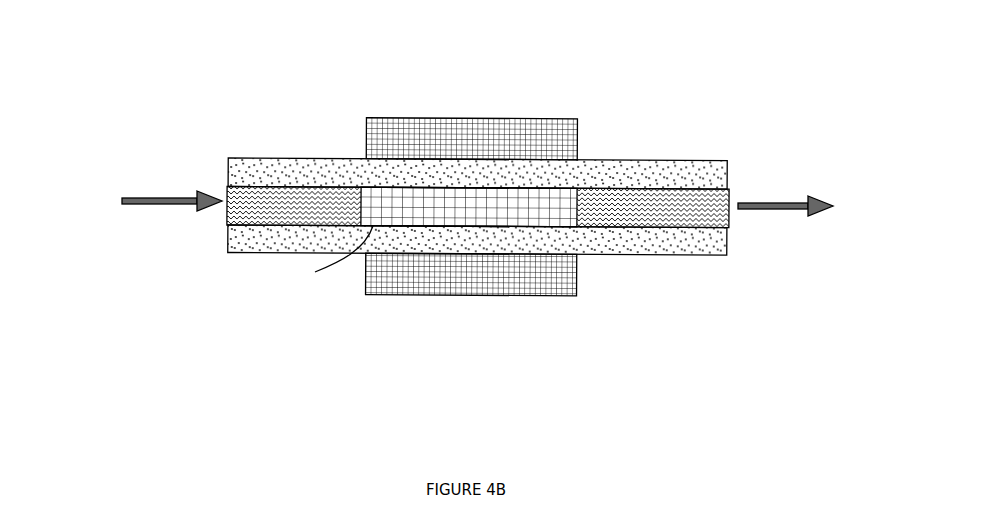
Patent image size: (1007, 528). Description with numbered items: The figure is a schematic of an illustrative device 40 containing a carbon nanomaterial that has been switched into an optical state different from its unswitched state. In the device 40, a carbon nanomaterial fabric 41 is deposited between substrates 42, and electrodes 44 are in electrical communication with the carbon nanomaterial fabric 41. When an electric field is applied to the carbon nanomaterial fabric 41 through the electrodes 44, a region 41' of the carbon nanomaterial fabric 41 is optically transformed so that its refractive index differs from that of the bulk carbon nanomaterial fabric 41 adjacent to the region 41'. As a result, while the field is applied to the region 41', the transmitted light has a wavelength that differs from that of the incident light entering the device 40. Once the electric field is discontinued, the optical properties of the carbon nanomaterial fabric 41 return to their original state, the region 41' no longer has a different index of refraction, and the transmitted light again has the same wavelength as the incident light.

The device 40 is at (150, 58).
The carbon nanomaterial fabric 41 is at (450, 153).
The region 41' is at (429, 152).
The substrates 42 is at (712, 171).
The electrodes 44 is at (562, 140).